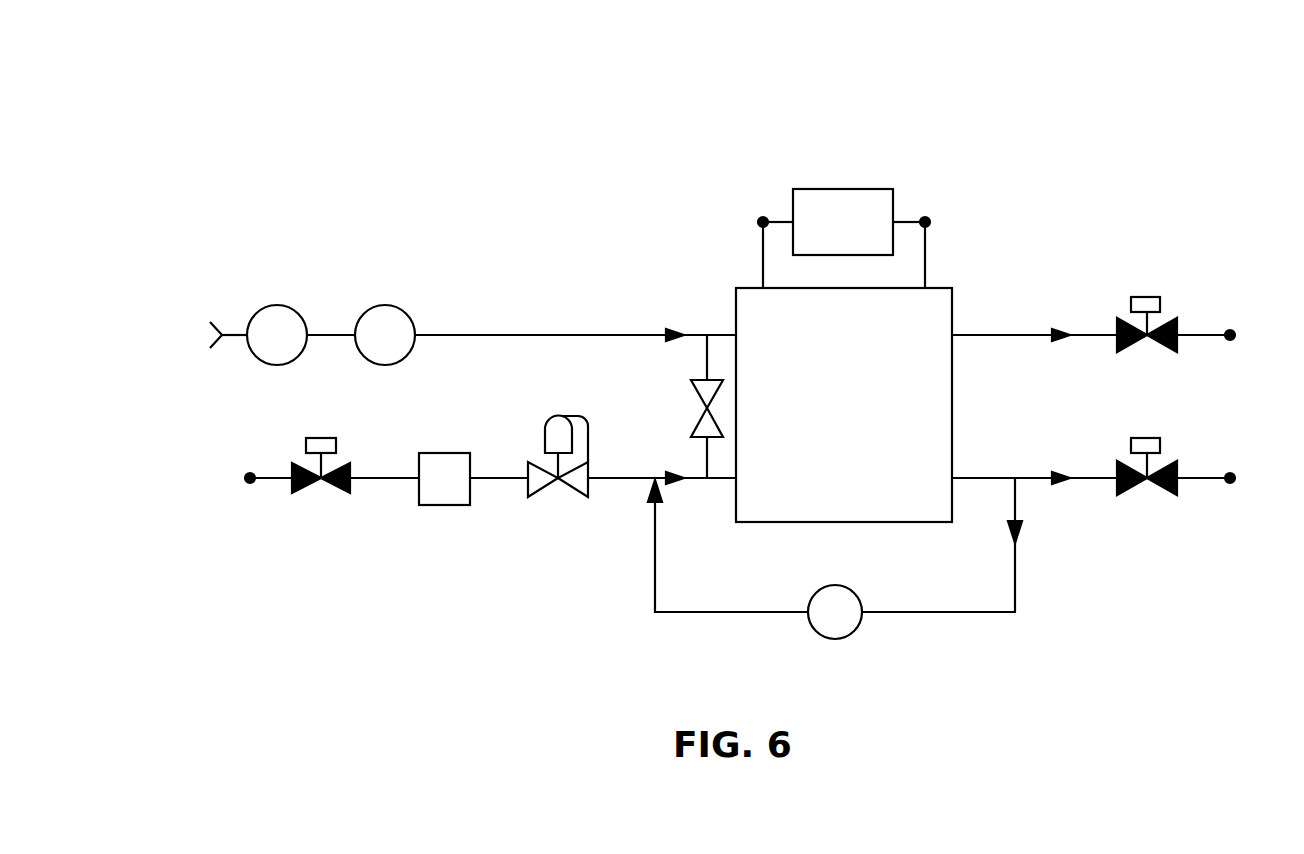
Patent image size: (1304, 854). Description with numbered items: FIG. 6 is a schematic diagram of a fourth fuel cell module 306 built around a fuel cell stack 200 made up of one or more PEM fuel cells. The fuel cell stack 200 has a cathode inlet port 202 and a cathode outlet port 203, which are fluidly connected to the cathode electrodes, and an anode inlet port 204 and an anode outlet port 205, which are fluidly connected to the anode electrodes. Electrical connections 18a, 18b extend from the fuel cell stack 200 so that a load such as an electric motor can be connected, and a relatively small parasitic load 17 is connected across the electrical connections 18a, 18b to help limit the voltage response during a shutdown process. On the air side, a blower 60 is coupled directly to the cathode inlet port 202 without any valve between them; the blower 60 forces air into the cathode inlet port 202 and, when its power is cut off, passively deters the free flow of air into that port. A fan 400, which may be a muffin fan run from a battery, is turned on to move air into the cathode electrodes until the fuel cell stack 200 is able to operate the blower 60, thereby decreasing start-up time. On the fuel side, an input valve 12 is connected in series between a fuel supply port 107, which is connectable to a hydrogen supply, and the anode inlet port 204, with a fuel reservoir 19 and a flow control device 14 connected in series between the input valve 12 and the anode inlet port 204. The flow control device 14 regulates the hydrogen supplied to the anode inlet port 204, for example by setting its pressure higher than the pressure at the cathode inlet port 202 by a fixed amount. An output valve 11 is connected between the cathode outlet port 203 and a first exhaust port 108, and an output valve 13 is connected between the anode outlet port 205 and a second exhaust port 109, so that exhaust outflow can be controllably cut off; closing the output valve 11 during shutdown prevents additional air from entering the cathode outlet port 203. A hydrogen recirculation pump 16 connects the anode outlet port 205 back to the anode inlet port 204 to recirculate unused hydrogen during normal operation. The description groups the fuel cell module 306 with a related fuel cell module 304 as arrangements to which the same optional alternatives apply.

The fuel cell module 306 is at (584, 118).
The fan 400 is at (255, 312).
The blower 60 is at (385, 335).
The fuel supply port 107 is at (250, 486).
The input valve 12 is at (306, 445).
The fuel reservoir 19 is at (444, 479).
The flow control device 14 is at (545, 437).
The fuel cell module 304 is at (562, 499).
The cathode inlet port 202 is at (724, 335).
The anode inlet port 204 is at (724, 480).
The hydrogen recirculation pump 16 is at (853, 632).
The fuel cell stack 200 is at (844, 405).
The parasitic load 17 is at (844, 222).
The electrical connection 18a is at (925, 255).
The electrical connection 18b is at (757, 240).
The cathode outlet port 203 is at (1012, 335).
The anode outlet port 205 is at (1032, 478).
The output valve 11 is at (1147, 297).
The output valve 13 is at (1162, 445).
The first exhaust port 108 is at (1231, 330).
The second exhaust port 109 is at (1231, 472).